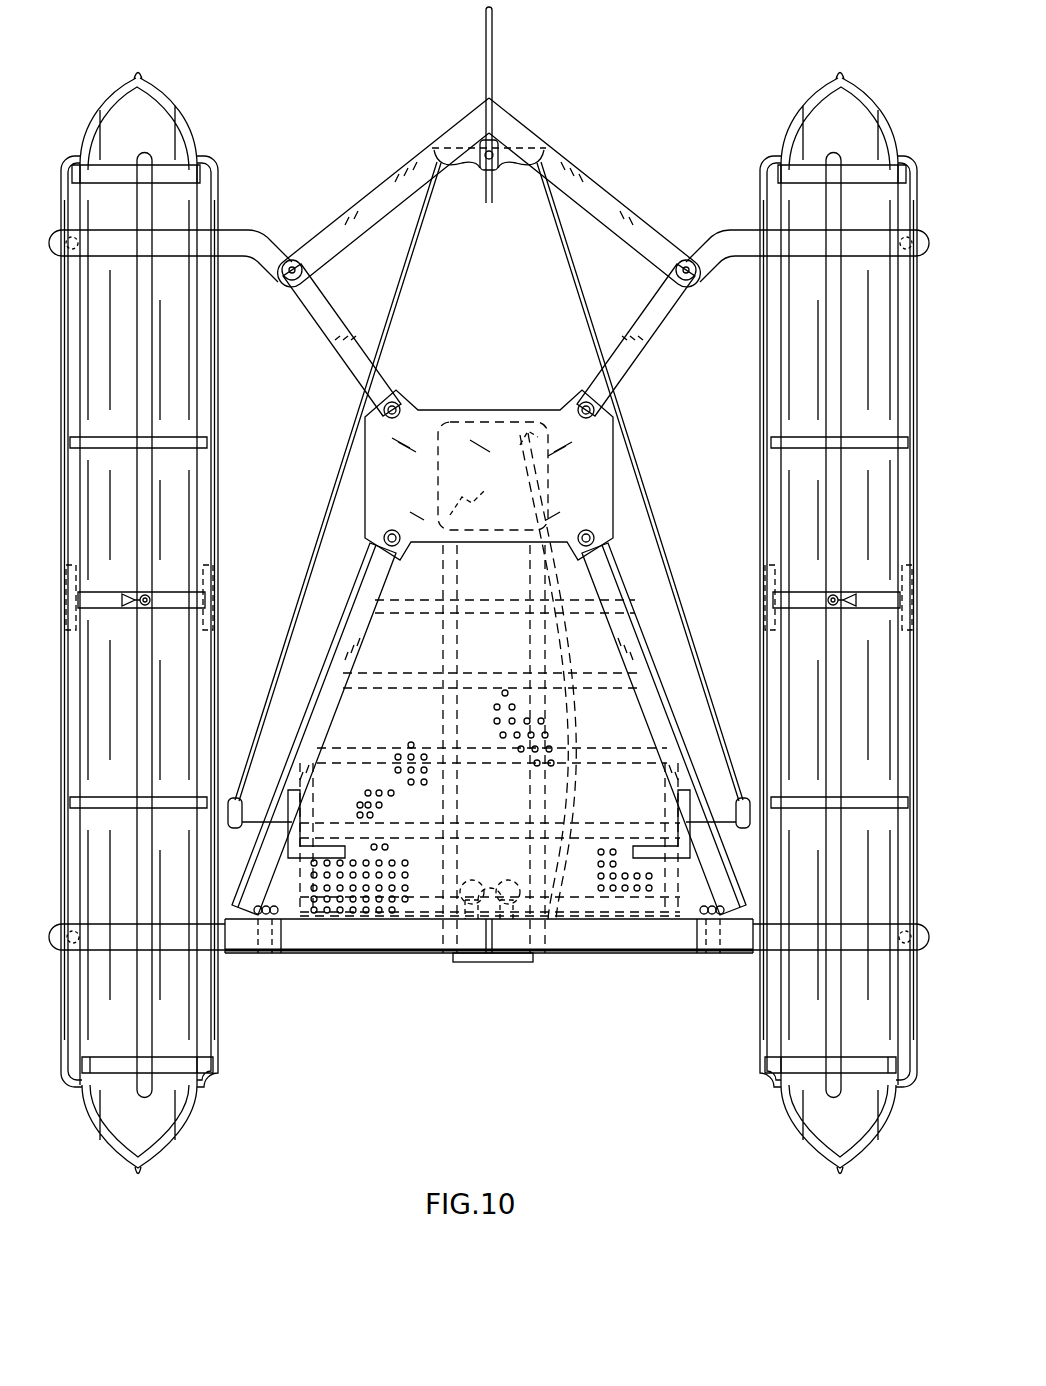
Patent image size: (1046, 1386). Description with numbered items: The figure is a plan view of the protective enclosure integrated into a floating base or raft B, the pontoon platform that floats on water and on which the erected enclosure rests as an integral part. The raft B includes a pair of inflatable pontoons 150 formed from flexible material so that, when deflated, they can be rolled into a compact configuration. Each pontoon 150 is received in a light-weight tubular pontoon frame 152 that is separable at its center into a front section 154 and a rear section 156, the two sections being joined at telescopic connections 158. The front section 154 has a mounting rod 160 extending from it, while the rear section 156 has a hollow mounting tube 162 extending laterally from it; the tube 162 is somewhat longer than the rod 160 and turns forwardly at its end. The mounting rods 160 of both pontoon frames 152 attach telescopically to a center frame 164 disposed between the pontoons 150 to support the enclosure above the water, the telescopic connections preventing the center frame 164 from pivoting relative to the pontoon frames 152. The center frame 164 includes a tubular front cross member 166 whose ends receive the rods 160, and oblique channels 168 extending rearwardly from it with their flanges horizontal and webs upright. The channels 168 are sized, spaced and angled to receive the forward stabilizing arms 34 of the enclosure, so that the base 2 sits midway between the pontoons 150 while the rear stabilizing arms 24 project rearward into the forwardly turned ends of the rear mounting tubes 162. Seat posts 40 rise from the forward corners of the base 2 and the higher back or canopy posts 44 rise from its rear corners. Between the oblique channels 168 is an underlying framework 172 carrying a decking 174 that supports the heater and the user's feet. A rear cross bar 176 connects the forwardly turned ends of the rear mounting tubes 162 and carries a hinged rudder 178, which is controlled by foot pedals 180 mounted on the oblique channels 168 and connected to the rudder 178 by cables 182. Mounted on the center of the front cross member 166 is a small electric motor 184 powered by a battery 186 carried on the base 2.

The base 2 is at (452, 415).
The rear stabilizing arms 24 is at (340, 345).
The forward stabilizing arms 34 is at (325, 660).
The seat posts 40 is at (392, 530).
The back or canopy posts 44 is at (398, 392).
The inflatable pontoons 150 is at (178, 118).
The pontoon frame 152 is at (222, 507).
The front section 154 is at (225, 1034).
The rear section 156 is at (215, 352).
The telescopic connections 158 is at (152, 580).
The mounting rod 160 is at (237, 958).
The mounting tube 162 is at (244, 229).
The center frame 164 is at (432, 963).
The front cross member 166 is at (585, 942).
The oblique channels 168 is at (322, 718).
The underlying framework 172 is at (520, 620).
The decking 174 is at (366, 912).
The rear cross bar 176 is at (368, 197).
The rudder 178 is at (486, 50).
The foot pedals 180 is at (333, 840).
The cables 182 is at (300, 598).
The electric motor 184 is at (492, 966).
The battery 186 is at (537, 472).
The floating base or raft B is at (385, 1085).